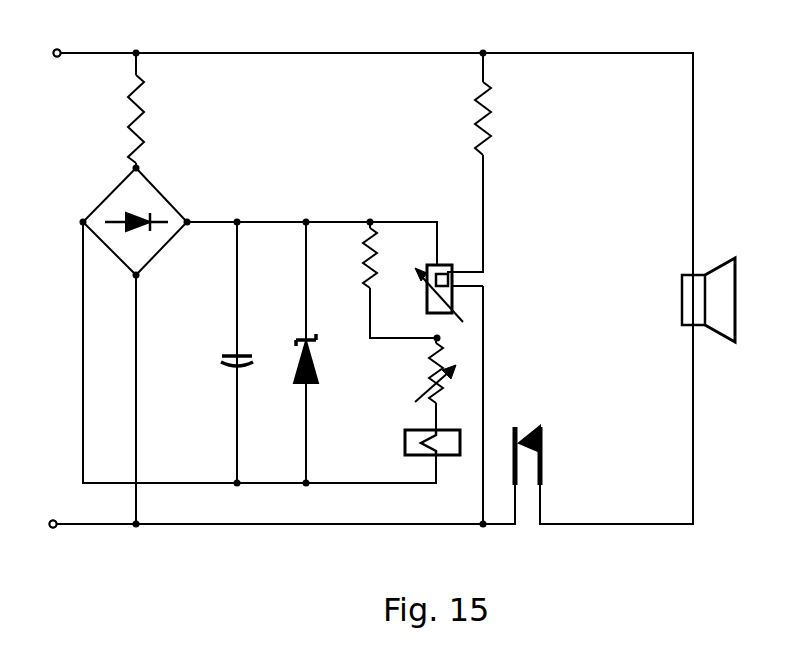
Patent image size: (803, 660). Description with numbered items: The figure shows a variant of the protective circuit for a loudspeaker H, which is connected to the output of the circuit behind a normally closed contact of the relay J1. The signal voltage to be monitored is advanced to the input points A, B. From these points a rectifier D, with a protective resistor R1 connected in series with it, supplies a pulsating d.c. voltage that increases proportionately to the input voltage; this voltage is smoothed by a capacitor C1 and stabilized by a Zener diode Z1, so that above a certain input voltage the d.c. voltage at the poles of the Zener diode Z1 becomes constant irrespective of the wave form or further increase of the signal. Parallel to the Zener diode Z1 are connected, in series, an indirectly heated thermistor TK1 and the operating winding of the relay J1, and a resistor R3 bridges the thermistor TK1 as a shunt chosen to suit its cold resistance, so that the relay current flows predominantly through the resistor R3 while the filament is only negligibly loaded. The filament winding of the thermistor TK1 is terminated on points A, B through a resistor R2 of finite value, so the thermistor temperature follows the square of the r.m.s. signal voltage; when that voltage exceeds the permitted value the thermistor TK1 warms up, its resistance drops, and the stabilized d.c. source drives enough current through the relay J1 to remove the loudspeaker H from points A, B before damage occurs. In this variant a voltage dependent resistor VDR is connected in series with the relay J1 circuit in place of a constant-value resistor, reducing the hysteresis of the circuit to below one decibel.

The input point A is at (45, 53).
The input point B is at (42, 524).
The resistor R1 is at (122, 119).
The resistor R2 is at (496, 118).
The resistor R3 is at (356, 258).
The rectifier D is at (134, 221).
The capacitor C1 is at (223, 352).
The Zener diode Z1 is at (317, 352).
The indirectly heated thermistor TK1 is at (436, 295).
The voltage dependent resistor VDR is at (412, 373).
The relay J1 is at (418, 447).
The loudspeaker H is at (720, 300).